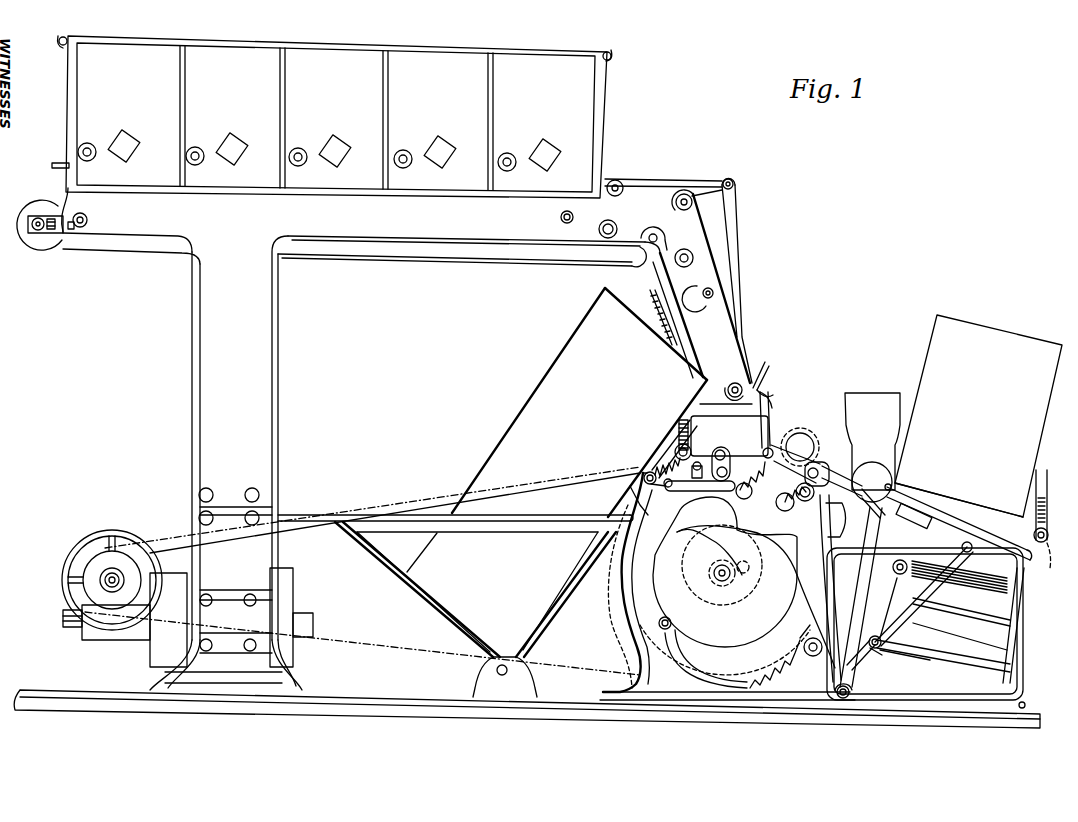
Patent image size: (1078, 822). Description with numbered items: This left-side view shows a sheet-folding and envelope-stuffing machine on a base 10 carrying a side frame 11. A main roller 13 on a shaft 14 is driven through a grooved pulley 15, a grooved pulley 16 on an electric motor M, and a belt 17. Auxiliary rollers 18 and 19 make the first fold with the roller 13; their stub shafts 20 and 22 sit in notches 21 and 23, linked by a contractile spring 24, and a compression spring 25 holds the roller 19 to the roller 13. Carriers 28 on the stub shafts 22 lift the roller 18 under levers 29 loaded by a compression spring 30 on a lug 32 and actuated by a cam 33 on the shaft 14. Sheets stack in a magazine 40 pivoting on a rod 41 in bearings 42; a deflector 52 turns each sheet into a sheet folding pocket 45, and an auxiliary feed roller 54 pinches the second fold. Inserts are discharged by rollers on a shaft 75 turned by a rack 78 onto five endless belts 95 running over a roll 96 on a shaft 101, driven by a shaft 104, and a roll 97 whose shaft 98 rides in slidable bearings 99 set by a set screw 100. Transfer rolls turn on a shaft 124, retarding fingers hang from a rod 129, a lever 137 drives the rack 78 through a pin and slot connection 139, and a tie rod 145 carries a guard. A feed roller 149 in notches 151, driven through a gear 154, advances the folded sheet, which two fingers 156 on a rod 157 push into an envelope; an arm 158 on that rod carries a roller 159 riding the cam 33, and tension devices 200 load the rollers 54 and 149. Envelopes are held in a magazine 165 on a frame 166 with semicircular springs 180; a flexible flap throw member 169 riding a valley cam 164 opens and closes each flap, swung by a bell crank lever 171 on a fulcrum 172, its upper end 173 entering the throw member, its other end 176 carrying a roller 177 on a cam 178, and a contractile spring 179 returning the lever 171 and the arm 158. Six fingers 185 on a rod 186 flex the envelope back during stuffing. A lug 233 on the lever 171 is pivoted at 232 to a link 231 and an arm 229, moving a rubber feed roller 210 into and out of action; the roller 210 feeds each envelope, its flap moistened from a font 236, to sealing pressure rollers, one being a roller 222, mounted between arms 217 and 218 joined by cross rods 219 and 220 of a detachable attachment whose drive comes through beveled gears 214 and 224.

The base 10 is at (415, 706).
The side frame 11 is at (190, 345).
The main roller 13 is at (785, 511).
The shaft 14 is at (716, 580).
The grooved pulley 15 is at (612, 618).
The grooved pulley 16 is at (96, 545).
The belt 17 is at (370, 632).
The auxiliary roller 18 is at (632, 487).
The auxiliary roller 19 is at (668, 438).
The stub shafts 20 is at (648, 468).
The notches 21 is at (622, 474).
The stub shafts 22 is at (728, 452).
The notches 23 is at (641, 474).
The contractile spring 24 is at (660, 460).
The compression spring 25 is at (690, 427).
The carriers 28 is at (666, 503).
The levers 29 is at (670, 489).
The compression spring 30 is at (698, 492).
The lug 32 is at (727, 450).
The cam 33 is at (676, 530).
The magazine 40 is at (512, 410).
The rod 41 is at (503, 665).
The bearings 42 is at (512, 700).
The sheet folding pocket 45 is at (768, 375).
The deflector 52 is at (752, 478).
The auxiliary feed roller 54 is at (780, 433).
The shaft 75 is at (88, 146).
The rack 78 is at (695, 181).
The endless belts 95 is at (513, 264).
The roll 96 is at (641, 260).
The roll 97 is at (18, 240).
The shaft 98 is at (38, 218).
The slidable bearings 99 is at (50, 230).
The set screw 100 is at (80, 228).
The shaft 101 is at (653, 234).
The shaft 104 is at (664, 316).
The shaft 124 is at (618, 182).
The rod 129 is at (716, 293).
The lever 137 is at (740, 238).
The pin and slot connection 139 is at (734, 184).
The tie rod 145 is at (733, 462).
The feed roller 149 is at (818, 466).
The notches 151 is at (739, 570).
The gear 154 is at (806, 440).
The fingers 156 is at (822, 592).
The rod 157 is at (813, 657).
The arm 158 is at (798, 639).
The roller 159 is at (742, 582).
The valley cam 164 is at (922, 505).
The magazine 165 is at (985, 330).
The frame 166 is at (976, 508).
The flexible flap throw member 169 is at (838, 510).
The bell crank lever 171 is at (775, 702).
The fulcrum 172 is at (846, 702).
The upper end 173 is at (884, 522).
The other end 176 is at (668, 701).
The roller 177 is at (700, 662).
The cam 178 is at (638, 597).
The contractile spring 179 is at (768, 664).
The semicircular springs 180 is at (873, 464).
The fingers 185 is at (866, 600).
The rod 186 is at (900, 575).
The tension device 200 is at (786, 492).
The rubber feed roller 210 is at (952, 572).
The beveled gear 214 is at (1046, 548).
The arm 217 is at (993, 655).
The arm 218 is at (883, 652).
The cross rod 219 is at (960, 615).
The cross rod 220 is at (968, 700).
The pressure roller 222 is at (978, 590).
The beveled gear 224 is at (1050, 476).
The arm 229 is at (1024, 552).
The link 231 is at (900, 622).
The pivotal connection 232 is at (916, 656).
The lug 233 is at (862, 662).
The font 236 is at (874, 395).
The electric motor M is at (292, 585).